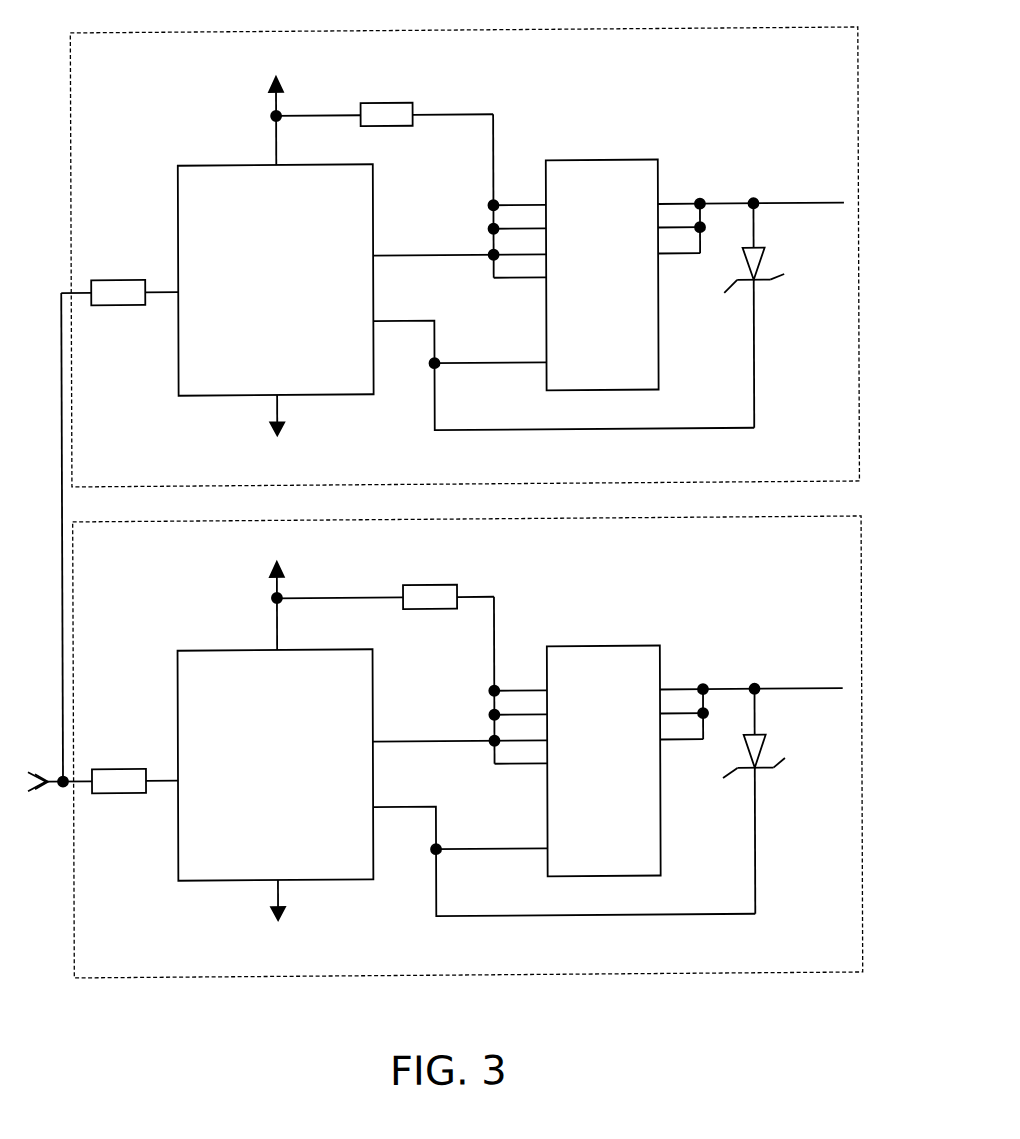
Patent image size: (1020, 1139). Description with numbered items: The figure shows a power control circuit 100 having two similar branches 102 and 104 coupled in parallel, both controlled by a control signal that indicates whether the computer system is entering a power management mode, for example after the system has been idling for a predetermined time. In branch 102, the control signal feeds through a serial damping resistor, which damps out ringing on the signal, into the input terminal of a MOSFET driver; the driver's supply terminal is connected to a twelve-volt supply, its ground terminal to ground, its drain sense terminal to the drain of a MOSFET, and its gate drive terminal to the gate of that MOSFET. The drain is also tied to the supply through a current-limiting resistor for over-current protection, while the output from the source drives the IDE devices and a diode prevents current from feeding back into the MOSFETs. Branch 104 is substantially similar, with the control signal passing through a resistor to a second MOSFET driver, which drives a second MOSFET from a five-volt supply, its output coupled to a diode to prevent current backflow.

The power control circuit 100 is at (80, 25).
The branch 102 is at (123, 82).
The branch 104 is at (123, 572).